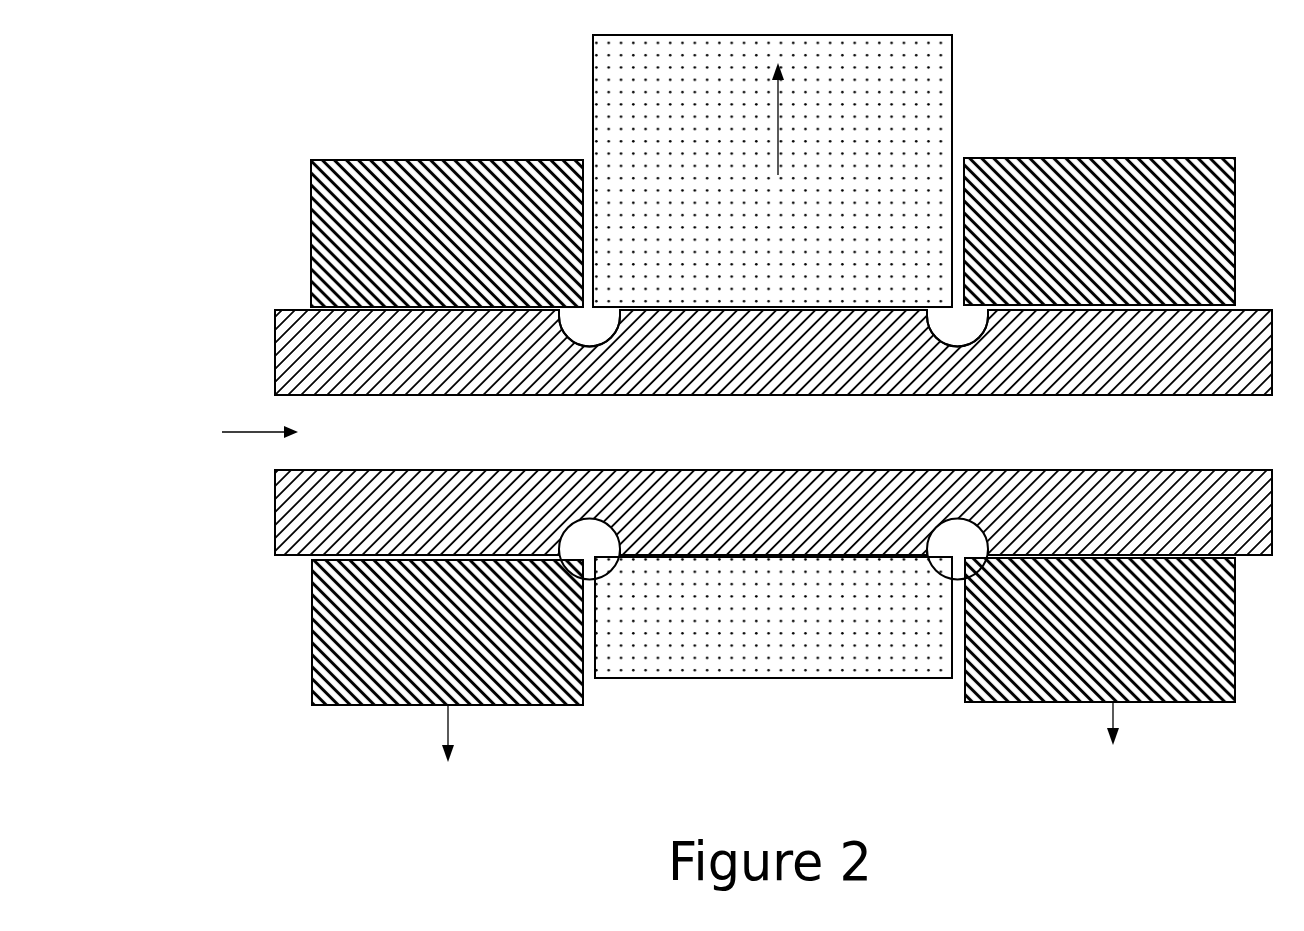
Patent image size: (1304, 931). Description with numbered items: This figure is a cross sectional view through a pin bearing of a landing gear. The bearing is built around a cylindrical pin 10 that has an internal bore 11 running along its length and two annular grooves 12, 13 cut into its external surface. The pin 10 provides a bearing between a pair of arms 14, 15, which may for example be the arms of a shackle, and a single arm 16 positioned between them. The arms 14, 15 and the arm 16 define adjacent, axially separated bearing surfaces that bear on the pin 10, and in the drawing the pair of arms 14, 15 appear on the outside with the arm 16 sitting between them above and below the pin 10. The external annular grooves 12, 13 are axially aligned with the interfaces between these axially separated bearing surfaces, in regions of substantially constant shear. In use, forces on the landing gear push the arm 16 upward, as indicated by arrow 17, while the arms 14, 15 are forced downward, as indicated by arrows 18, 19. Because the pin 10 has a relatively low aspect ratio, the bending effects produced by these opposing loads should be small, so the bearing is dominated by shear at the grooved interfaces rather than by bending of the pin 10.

The cylindrical pin 10 is at (275, 353).
The internal bore 11 is at (229, 430).
The annular groove 12 is at (590, 346).
The annular groove 13 is at (957, 346).
The arm 14 is at (378, 705).
The arm 15 is at (1020, 702).
The arm 16 is at (952, 105).
The arrow 17 is at (778, 115).
The arrow 18 is at (448, 730).
The arrow 19 is at (1114, 743).